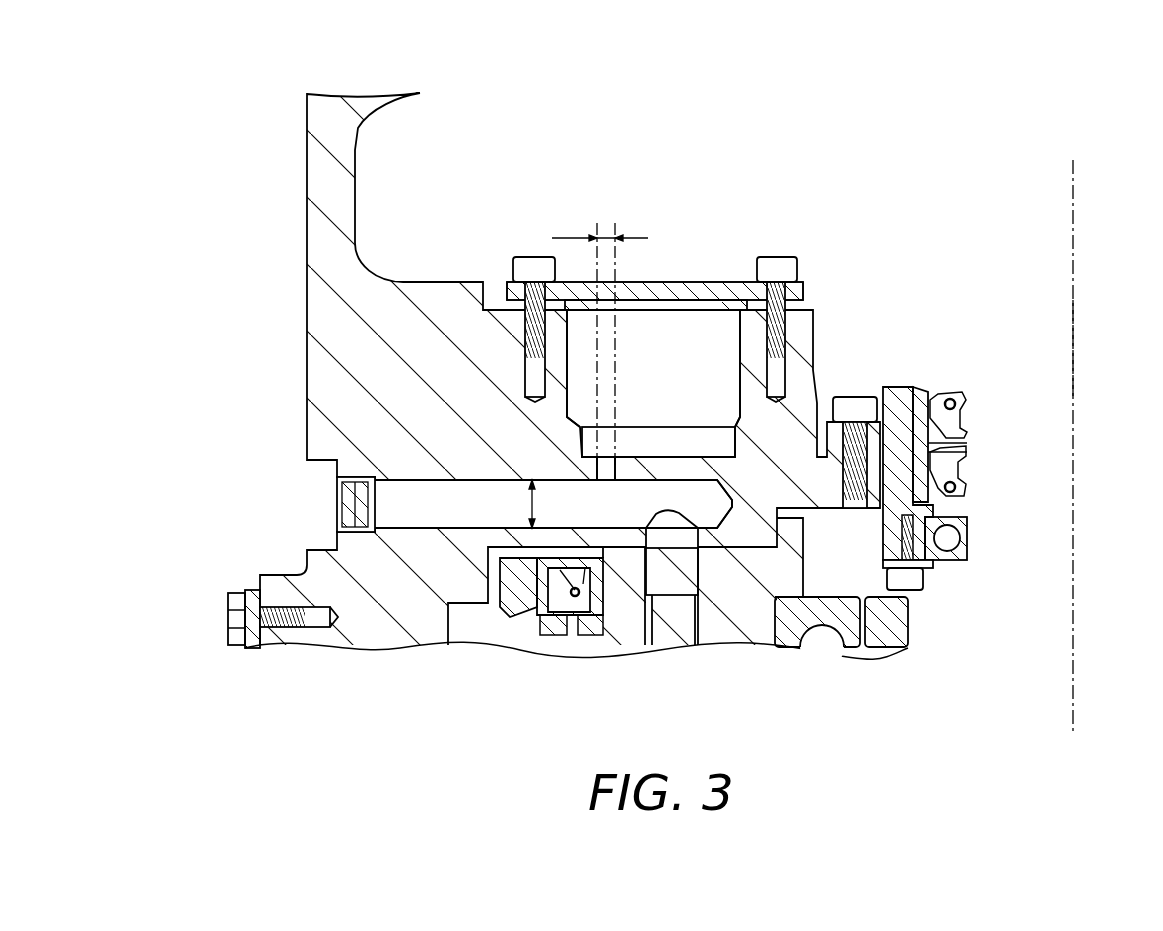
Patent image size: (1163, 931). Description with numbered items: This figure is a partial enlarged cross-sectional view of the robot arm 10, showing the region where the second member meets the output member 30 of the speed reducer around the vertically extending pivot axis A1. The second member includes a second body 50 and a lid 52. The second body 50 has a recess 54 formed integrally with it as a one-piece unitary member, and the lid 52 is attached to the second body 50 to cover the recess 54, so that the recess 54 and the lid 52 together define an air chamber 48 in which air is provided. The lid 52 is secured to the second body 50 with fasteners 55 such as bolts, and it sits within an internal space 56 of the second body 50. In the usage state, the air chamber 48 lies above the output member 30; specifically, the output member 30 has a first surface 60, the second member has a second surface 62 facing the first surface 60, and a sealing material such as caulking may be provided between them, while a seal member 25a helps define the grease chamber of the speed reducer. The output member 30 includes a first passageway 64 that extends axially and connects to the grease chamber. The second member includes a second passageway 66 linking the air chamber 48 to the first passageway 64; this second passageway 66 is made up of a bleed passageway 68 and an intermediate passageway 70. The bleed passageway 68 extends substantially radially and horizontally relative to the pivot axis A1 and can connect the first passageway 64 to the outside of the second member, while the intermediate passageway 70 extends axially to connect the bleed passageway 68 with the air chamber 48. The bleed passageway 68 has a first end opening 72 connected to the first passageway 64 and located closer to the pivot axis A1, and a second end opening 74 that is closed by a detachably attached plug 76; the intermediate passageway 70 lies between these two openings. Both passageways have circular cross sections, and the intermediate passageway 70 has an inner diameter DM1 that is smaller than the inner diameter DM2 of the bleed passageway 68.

The robot arm 10 is at (879, 137).
The seal member 25a is at (945, 381).
The output member 30 is at (728, 610).
The air chamber 48 is at (674, 335).
The second body 50 is at (330, 295).
The lid 52 is at (700, 292).
The recess 54 is at (740, 372).
The fasteners 55 is at (533, 268).
The internal space 56 is at (418, 203).
The first surface 60 is at (742, 540).
The second surface 62 is at (604, 612).
The first passageway 64 is at (657, 610).
The second passageway 66 is at (247, 383).
The bleed passageway 68 is at (478, 480).
The intermediate passageway 70 is at (583, 470).
The first end opening 72 is at (688, 540).
The second end opening 74 is at (350, 502).
The plug 76 is at (342, 525).
The inner diameter of intermediate passageway DM1 is at (598, 341).
The inner diameter of bleed passageway DM2 is at (530, 503).
The pivot axis A1 is at (1073, 210).